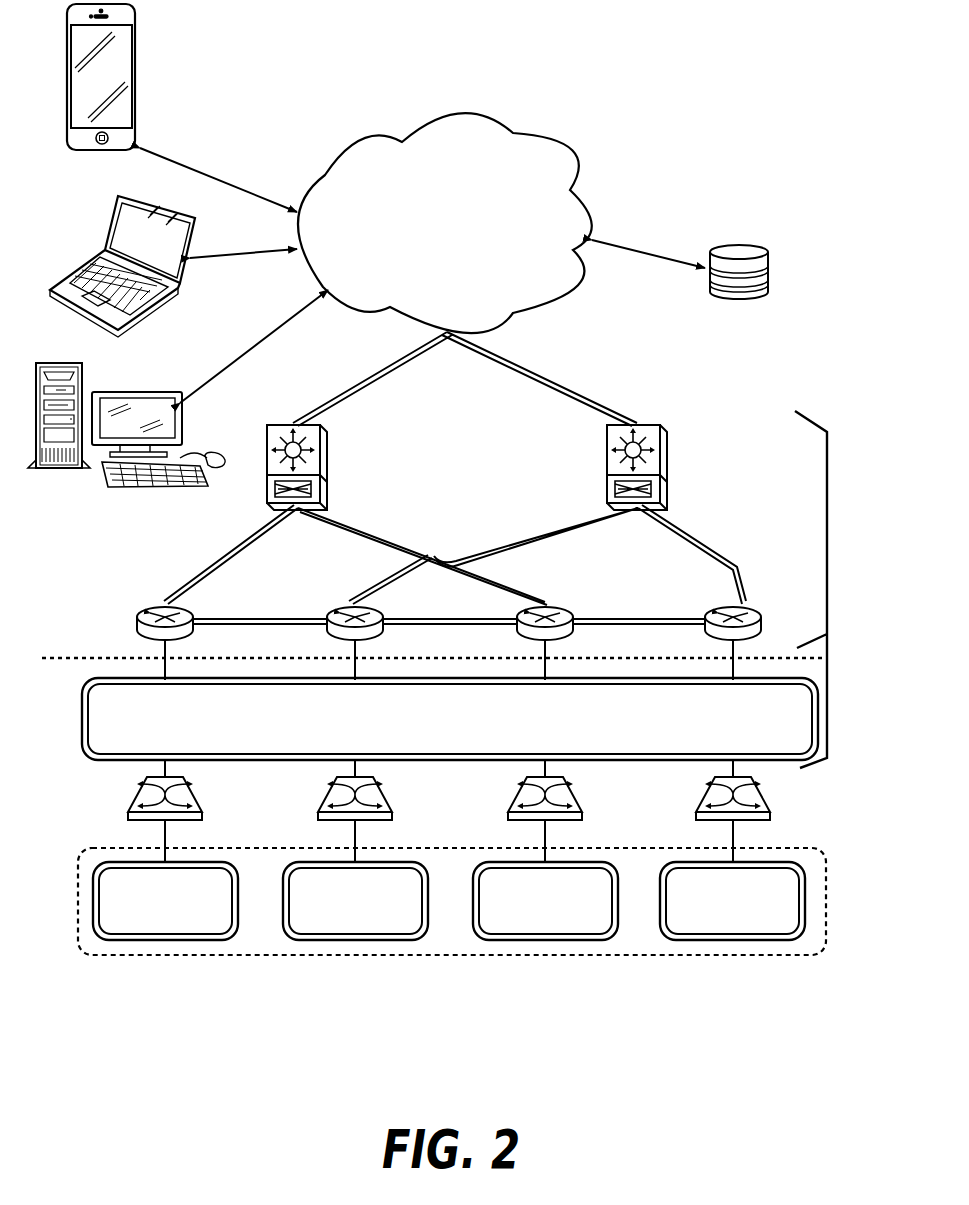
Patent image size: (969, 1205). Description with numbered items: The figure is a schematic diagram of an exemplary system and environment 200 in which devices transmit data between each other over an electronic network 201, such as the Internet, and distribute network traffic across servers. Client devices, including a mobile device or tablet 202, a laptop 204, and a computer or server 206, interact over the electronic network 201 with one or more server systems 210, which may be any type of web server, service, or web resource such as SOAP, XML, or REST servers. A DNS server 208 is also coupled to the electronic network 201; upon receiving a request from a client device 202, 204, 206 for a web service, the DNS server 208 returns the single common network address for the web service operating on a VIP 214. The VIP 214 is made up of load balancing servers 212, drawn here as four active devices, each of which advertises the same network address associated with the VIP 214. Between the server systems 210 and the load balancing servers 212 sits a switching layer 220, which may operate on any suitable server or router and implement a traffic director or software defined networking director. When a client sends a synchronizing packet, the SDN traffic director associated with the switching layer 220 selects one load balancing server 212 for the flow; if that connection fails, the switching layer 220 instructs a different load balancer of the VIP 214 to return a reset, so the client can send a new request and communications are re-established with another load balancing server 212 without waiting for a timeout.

The system and environment 200 is at (692, 134).
The electronic network 201 is at (548, 142).
The mobile device or tablet 202 is at (138, 110).
The laptop 204 is at (196, 217).
The computer or server 206 is at (134, 394).
The DNS server 208 is at (752, 243).
The server systems 210 is at (827, 533).
The load balancing servers 212 is at (205, 940).
The VIP 214 is at (453, 955).
The switching layer 220 is at (117, 680).